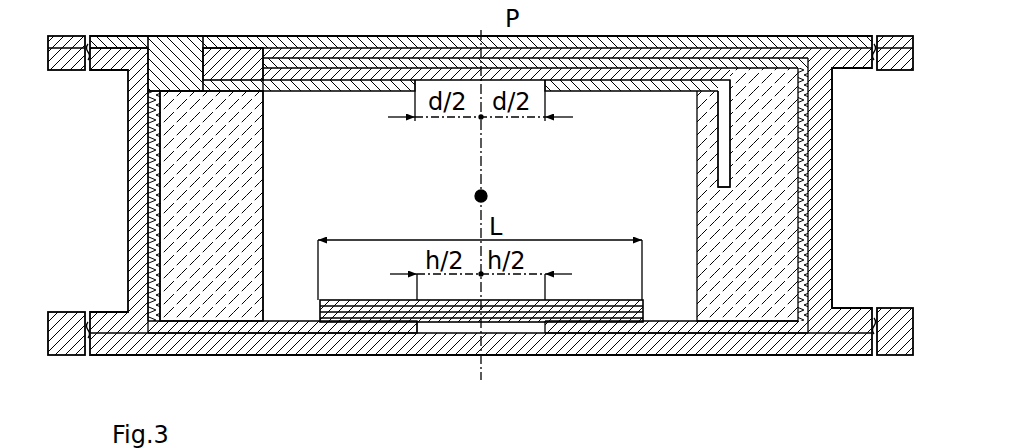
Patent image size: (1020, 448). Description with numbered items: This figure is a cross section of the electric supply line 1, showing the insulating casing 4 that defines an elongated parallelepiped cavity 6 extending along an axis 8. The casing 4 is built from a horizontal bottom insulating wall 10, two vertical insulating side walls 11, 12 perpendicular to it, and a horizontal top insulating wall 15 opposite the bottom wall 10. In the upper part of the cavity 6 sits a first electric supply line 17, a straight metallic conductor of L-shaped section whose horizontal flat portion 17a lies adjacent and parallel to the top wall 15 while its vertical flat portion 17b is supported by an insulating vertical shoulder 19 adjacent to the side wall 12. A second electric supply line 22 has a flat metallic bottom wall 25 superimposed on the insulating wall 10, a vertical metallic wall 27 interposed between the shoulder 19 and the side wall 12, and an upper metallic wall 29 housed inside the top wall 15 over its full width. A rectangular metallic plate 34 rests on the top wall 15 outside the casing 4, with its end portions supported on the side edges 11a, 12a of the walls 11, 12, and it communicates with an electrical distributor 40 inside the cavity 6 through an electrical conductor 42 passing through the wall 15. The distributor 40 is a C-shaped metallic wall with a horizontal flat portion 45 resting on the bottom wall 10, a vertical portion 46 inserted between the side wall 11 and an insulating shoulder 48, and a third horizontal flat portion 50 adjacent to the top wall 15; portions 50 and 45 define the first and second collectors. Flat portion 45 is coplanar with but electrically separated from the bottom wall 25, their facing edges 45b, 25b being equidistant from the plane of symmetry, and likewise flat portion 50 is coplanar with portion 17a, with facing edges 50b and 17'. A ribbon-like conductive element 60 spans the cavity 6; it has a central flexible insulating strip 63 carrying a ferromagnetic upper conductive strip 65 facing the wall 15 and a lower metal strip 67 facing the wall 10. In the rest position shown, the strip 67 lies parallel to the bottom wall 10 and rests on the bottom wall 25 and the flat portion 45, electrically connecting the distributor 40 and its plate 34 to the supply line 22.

The supply line 1 is at (702, 362).
The insulating casing 4 is at (600, 33).
The cavity 6 is at (311, 268).
The axis 8 is at (490, 198).
The bottom insulating wall 10 is at (115, 320).
The side wall 11 is at (138, 232).
The side edge 11a is at (107, 63).
The side wall 12 is at (817, 175).
The side edge 12a is at (853, 60).
The top insulating wall 15 is at (238, 65).
The first electric supply line 17 is at (496, 184).
The edge 17' is at (568, 123).
The first horizontal flat portion 17a is at (637, 85).
The second vertical flat portion 17b is at (720, 155).
The vertical shoulder 19 is at (727, 223).
The second electric supply line 22 is at (673, 297).
The bottom wall 25 is at (663, 330).
The edge 25b is at (548, 332).
The vertical metallic wall 27 is at (803, 225).
The upper metallic wall 29 is at (292, 62).
The metallic plate 34 is at (318, 35).
The electrical distributor 40 is at (347, 102).
The electrical conductor 42 is at (180, 70).
The first horizontal flat portion 45 is at (305, 330).
The edge 45b is at (410, 332).
The second vertical portion 46 is at (157, 187).
The shoulder 48 is at (240, 220).
The third horizontal flat portion 50 is at (387, 85).
The edge 50b is at (425, 82).
The ribbon-like conductive element 60 is at (585, 297).
The central portion 63 is at (385, 313).
The upper conductive strip 65 is at (371, 298).
The metal strip 67 is at (343, 320).